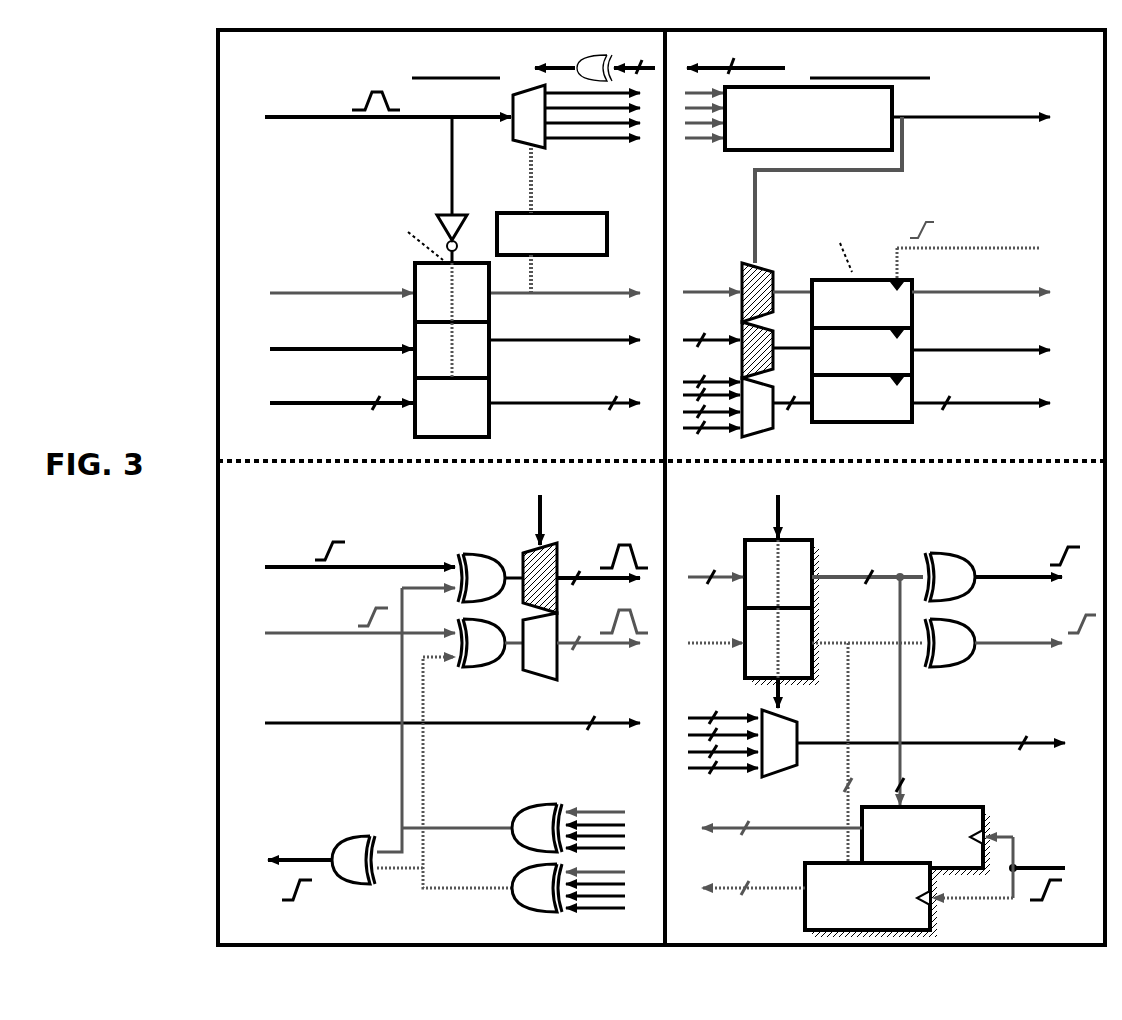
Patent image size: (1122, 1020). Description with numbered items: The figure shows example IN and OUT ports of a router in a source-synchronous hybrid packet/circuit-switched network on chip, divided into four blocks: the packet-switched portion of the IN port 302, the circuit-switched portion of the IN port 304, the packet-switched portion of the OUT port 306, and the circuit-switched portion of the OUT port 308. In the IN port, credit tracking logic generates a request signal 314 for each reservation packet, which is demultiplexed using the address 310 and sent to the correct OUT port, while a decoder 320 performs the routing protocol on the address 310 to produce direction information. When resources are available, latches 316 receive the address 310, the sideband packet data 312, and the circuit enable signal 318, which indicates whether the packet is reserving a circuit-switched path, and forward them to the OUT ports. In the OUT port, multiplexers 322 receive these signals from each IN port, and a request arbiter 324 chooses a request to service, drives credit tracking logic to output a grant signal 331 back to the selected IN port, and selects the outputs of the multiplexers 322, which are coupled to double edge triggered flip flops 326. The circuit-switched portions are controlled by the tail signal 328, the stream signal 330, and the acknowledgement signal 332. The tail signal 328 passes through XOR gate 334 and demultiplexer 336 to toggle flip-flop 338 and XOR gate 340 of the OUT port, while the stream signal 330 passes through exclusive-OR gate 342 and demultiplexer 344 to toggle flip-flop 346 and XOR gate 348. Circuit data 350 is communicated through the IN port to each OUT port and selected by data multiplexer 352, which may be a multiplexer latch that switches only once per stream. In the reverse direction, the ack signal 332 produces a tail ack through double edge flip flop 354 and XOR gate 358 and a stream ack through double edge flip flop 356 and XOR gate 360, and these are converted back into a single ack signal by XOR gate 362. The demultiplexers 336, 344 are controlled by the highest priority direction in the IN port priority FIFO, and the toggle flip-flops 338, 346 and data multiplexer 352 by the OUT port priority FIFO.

The packet-switched portion of IN port 302 is at (268, 63).
The circuit-switched portion of IN port 304 is at (268, 498).
The packet-switched portion of OUT port 306 is at (1077, 71).
The circuit-switched portion of OUT port 308 is at (1092, 498).
The address 310 is at (296, 254).
The sideband packet data 312 is at (286, 380).
The request signal 314 is at (292, 100).
The latches 316 is at (490, 300).
The circuit enable signal 318 is at (282, 326).
The decoder 320 is at (607, 235).
The multiplexers 322 is at (777, 392).
The request arbiter 324 is at (738, 150).
The double edge triggered flip flops 326 is at (912, 318).
The tail signal 328 is at (272, 532).
The stream signal 330 is at (272, 594).
The grant signal 331 is at (798, 56).
The acknowledgement signal 332 is at (1045, 838).
The XOR gate 334 is at (470, 555).
The demultiplexer 336 is at (552, 545).
The toggle flip-flop 338 is at (748, 540).
The XOR gate 340 is at (940, 555).
The exclusive-OR gate 342 is at (478, 670).
The demultiplexer 344 is at (535, 675).
The toggle flip-flop 346 is at (748, 680).
The XOR gate 348 is at (955, 668).
The circuit data 350 is at (272, 675).
The data multiplexer 352 is at (783, 770).
The double edge flip flop 354 is at (930, 806).
The double edge flip flop 356 is at (815, 862).
The XOR gate 358 is at (550, 806).
The XOR gate 360 is at (518, 875).
The XOR gate 362 is at (342, 880).